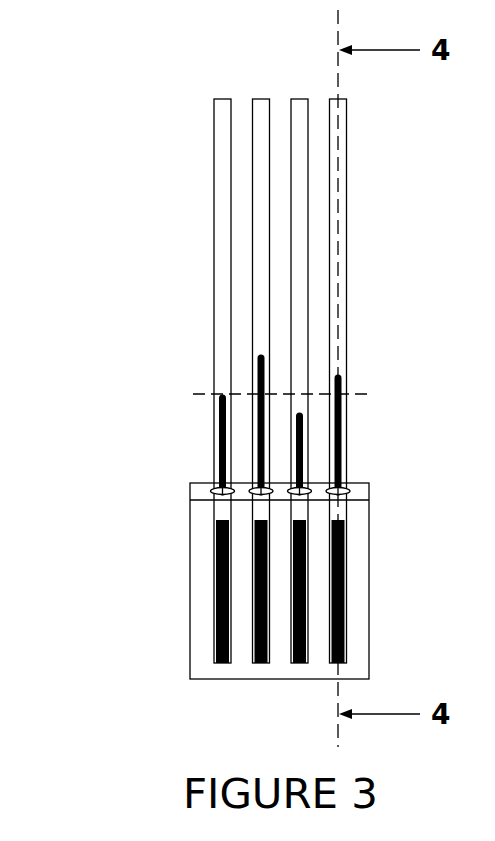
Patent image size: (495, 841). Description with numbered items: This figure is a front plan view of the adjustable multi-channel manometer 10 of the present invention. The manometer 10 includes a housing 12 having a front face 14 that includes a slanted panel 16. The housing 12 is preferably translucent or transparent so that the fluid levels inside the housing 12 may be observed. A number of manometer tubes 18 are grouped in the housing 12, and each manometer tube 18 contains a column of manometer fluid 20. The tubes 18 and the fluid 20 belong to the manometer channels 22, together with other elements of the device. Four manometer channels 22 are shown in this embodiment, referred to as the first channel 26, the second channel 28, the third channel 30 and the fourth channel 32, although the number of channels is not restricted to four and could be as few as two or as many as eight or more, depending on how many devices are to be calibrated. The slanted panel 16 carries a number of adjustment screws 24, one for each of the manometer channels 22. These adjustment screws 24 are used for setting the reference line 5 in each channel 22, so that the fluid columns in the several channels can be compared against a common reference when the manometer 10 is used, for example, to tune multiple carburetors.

The manometer 10 is at (100, 361).
The housing 12 is at (138, 564).
The front face 14 is at (190, 578).
The slanted panel 16 is at (190, 492).
The manometer tube 18 is at (214, 443).
The manometer fluid 20 is at (342, 415).
The manometer channel 22 is at (120, 188).
The adjustment screw 24 is at (347, 491).
The channel #1 26 is at (214, 158).
The channel #2 28 is at (253, 122).
The channel #3 30 is at (307, 128).
The channel #4 32 is at (341, 197).
The reference line 5 is at (367, 394).